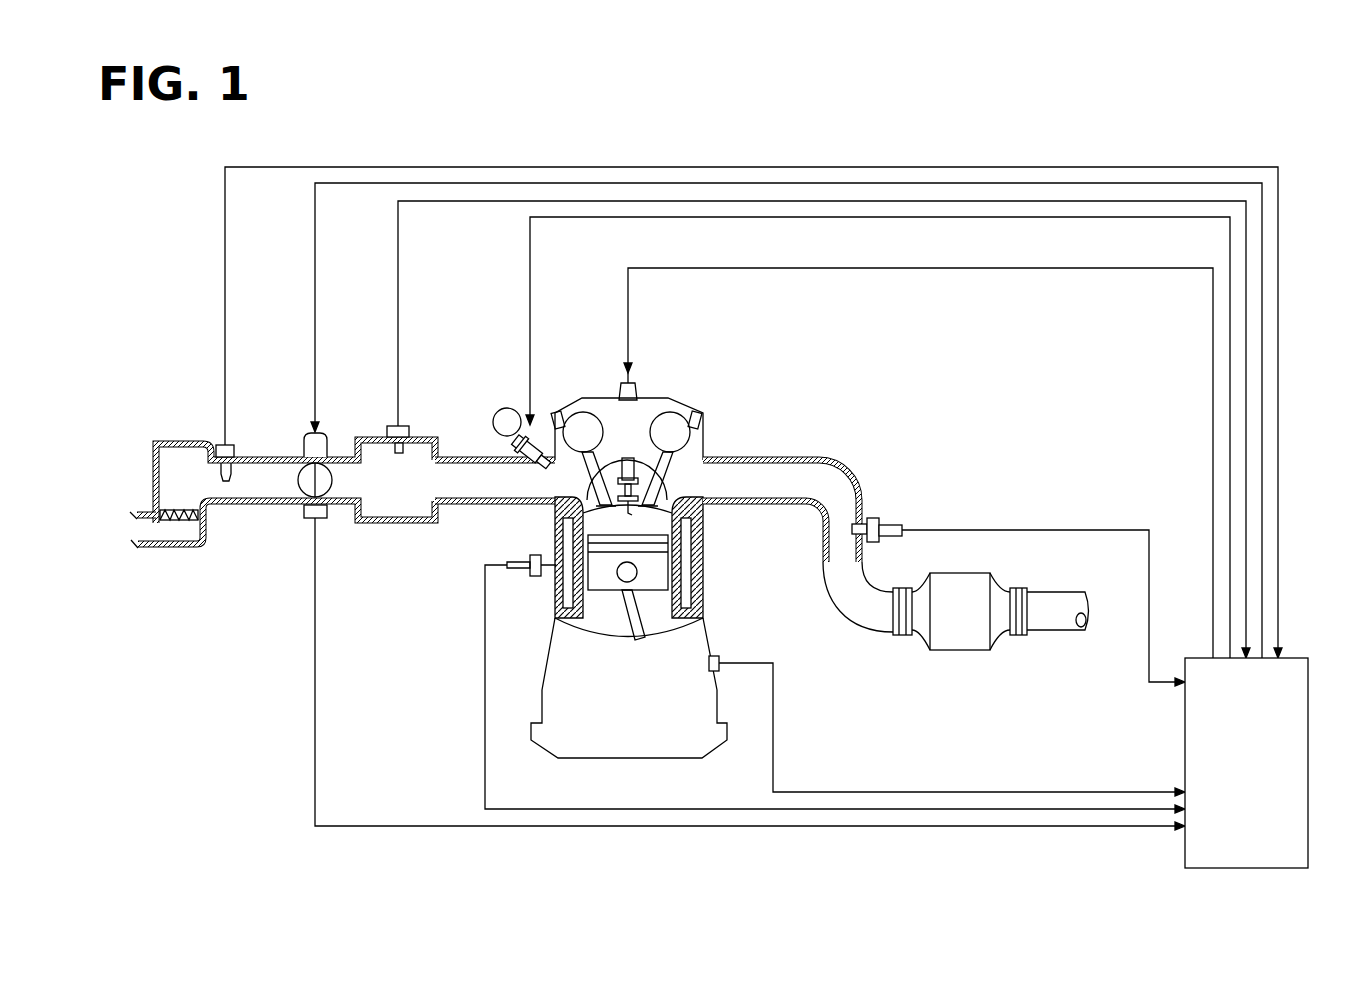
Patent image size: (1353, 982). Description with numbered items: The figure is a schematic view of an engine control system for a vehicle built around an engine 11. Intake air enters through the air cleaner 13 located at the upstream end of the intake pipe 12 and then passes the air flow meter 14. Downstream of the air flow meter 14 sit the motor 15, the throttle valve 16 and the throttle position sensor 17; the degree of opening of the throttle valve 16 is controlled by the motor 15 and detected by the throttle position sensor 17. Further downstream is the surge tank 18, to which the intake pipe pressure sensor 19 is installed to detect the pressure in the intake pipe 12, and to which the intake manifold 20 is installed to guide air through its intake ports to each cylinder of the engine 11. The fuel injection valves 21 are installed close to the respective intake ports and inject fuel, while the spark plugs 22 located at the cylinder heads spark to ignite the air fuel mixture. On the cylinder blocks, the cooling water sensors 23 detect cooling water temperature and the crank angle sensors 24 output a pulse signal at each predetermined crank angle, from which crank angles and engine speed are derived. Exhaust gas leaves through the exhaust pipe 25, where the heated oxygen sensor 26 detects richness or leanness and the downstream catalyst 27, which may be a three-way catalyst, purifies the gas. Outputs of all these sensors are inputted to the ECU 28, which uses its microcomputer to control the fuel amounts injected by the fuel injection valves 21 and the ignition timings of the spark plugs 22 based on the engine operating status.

The engine 11 is at (684, 396).
The intake pipe 12 is at (268, 457).
The air cleaner 13 is at (178, 522).
The air flow meter 14 is at (217, 443).
The motor 15 is at (323, 440).
The throttle valve 16 is at (326, 490).
The throttle position sensor 17 is at (306, 520).
The surge tank 18 is at (395, 524).
The intake pipe pressure sensor 19 is at (407, 427).
The intake manifold 20 is at (460, 457).
The fuel injection valve 21 is at (510, 456).
The spark plug 22 is at (643, 445).
The cooling water sensor 23 is at (533, 578).
The crank angle sensor 24 is at (722, 657).
The exhaust pipe 25 is at (806, 457).
The oxygen sensor 26 is at (877, 518).
The catalyst 27 is at (975, 574).
The engine control unit (ECU) 28 is at (1185, 848).